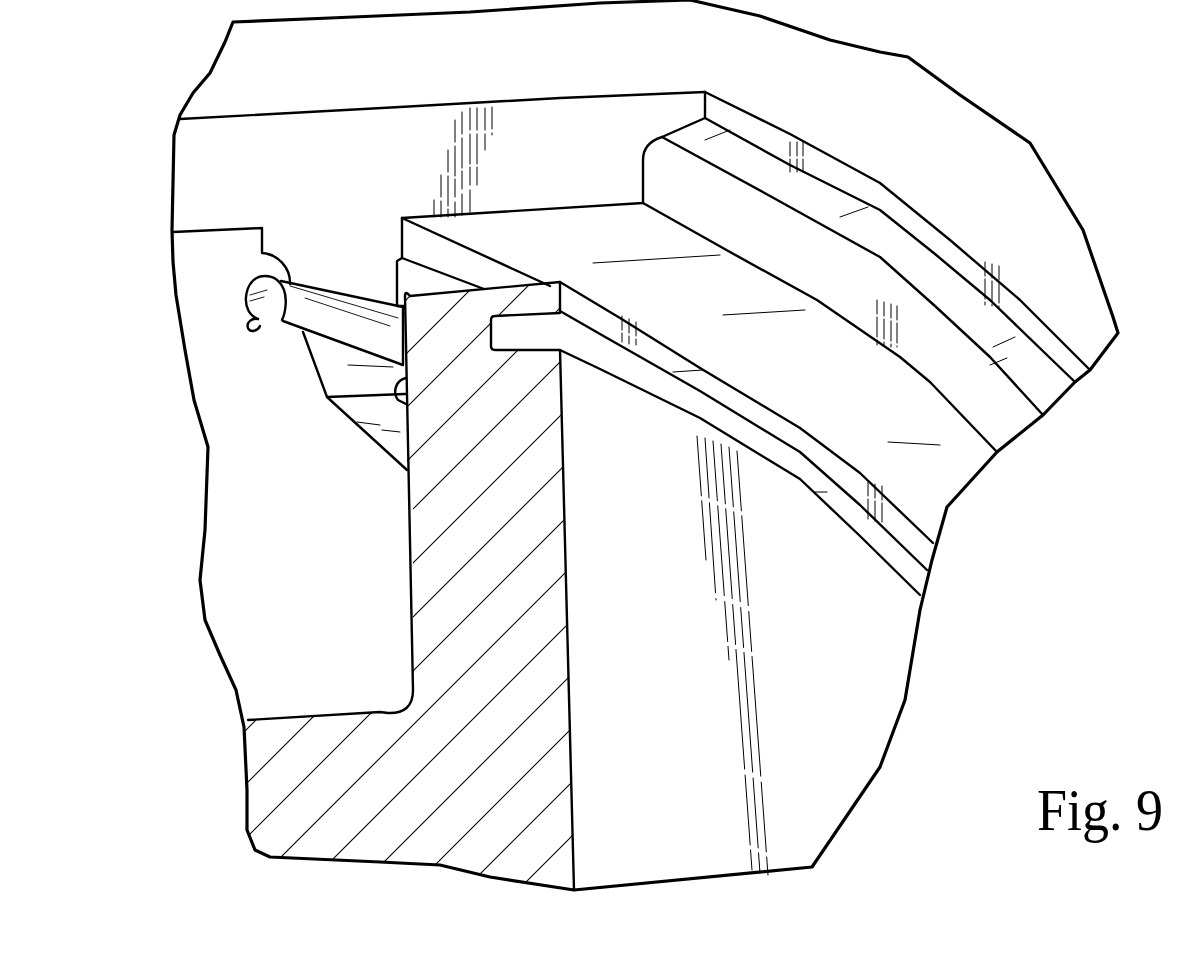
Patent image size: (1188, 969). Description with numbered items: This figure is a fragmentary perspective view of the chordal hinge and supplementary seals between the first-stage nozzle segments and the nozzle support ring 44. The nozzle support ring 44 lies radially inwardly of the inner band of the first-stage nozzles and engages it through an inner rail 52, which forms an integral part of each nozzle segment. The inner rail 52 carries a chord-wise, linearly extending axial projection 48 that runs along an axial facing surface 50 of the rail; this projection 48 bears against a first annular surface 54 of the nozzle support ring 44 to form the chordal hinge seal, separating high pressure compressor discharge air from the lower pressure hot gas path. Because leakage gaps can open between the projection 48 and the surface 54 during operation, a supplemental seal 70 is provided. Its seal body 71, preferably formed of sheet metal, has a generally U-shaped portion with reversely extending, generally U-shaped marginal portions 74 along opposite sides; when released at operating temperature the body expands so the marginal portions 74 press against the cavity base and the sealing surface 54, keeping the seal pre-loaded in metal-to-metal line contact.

The nozzle support ring 44 is at (590, 646).
The axial projection 48 is at (398, 375).
The axial facing surface 50 is at (423, 280).
The inner rail 52 is at (382, 282).
The first annular surface 54 is at (412, 621).
The supplemental seal 70 is at (333, 240).
The seal body 71 is at (250, 283).
The marginal portions 74 is at (249, 325).